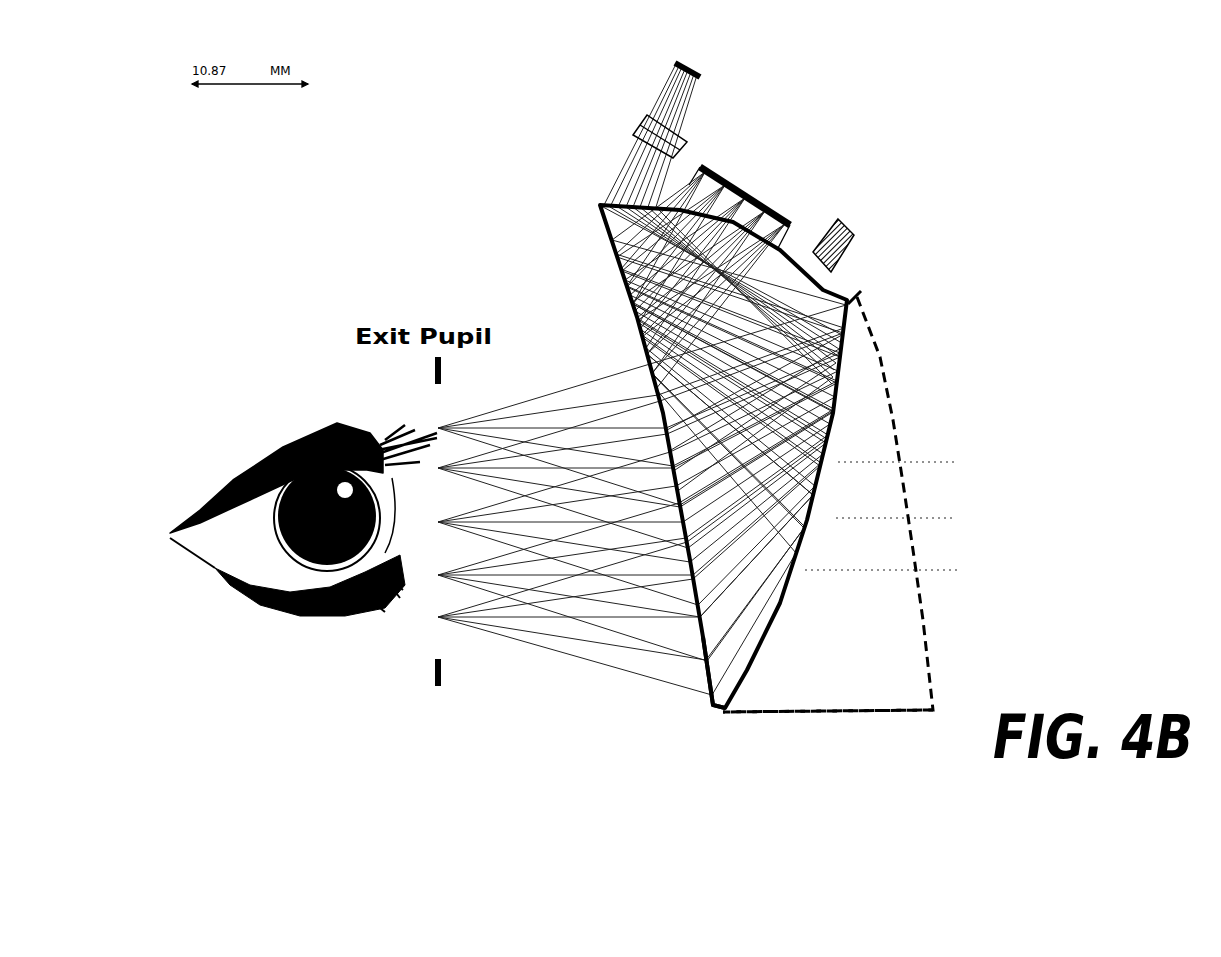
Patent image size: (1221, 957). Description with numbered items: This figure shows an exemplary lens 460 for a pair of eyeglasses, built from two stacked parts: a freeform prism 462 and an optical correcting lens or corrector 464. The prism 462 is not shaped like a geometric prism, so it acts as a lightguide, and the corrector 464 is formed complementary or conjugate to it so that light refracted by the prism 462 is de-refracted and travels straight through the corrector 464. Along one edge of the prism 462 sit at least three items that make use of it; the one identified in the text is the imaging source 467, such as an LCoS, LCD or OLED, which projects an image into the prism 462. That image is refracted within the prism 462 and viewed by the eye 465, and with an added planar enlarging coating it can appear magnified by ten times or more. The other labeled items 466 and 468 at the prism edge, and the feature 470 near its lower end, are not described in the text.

The lens 460 is at (828, 741).
The prism 462 is at (616, 265).
The corrector 464 is at (898, 429).
The eye 465 is at (289, 519).
The NIR sensor 466 is at (669, 61).
The imaging source 467 is at (772, 198).
The NIR LED 468 is at (883, 200).
The prism lower surface edge 470 is at (705, 660).